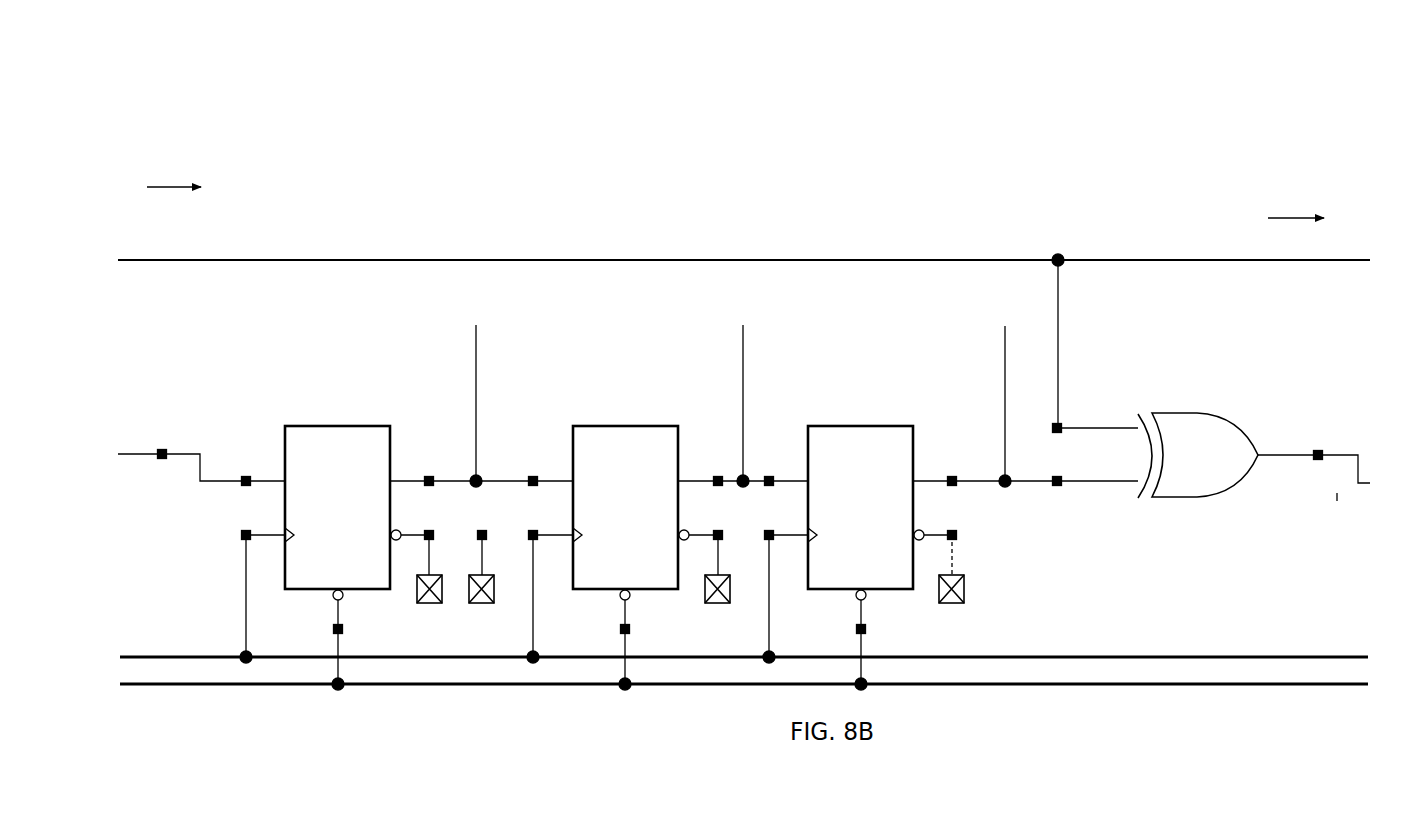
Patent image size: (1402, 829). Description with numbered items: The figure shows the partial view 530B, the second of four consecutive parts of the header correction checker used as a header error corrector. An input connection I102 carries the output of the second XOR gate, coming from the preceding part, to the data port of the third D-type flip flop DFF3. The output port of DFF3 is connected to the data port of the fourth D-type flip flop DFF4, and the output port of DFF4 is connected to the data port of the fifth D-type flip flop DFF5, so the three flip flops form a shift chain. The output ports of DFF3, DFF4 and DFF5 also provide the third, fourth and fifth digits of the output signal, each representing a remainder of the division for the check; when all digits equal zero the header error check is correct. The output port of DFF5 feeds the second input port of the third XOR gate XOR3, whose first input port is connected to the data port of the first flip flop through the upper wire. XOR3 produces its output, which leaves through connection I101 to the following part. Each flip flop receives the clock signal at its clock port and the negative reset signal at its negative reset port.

The partial view of header correction checker 530B is at (1150, 103).
The third D-type flip flop DFF3 is at (343, 513).
The fourth D-type flip flop DFF4 is at (631, 513).
The fifth D-type flip flop DFF5 is at (866, 513).
The third XOR gate XOR3 is at (1200, 461).
The input port I102 is at (201, 440).
The output port I101 is at (1314, 448).